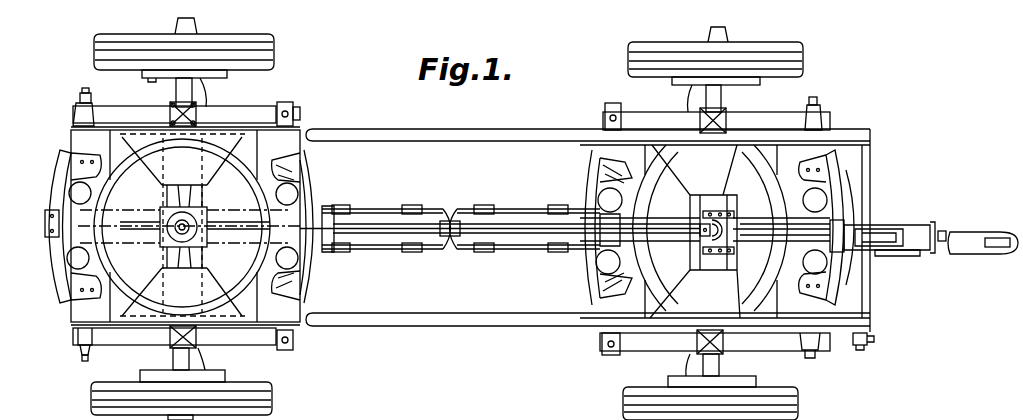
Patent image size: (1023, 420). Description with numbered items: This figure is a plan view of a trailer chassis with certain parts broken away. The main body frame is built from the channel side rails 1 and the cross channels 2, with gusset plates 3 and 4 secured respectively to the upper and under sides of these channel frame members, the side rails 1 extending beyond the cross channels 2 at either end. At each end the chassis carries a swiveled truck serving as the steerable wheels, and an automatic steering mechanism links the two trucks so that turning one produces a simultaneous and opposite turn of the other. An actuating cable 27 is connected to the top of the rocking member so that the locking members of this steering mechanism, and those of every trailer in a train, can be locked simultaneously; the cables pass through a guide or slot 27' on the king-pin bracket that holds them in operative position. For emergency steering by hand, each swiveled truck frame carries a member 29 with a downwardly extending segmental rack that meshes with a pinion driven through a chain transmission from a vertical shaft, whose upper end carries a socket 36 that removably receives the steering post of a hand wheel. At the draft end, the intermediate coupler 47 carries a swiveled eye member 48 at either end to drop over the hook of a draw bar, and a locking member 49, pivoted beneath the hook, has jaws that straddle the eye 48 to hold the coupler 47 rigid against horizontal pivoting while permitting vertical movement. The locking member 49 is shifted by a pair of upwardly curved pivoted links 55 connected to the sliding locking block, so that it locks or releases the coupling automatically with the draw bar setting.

The channel side rails 1 is at (499, 131).
The cross channels 2 is at (700, 250).
The gusset plate 3 is at (684, 170).
The gusset plate 4 is at (732, 180).
The actuating cable 27 is at (565, 219).
The guide or slot 27' is at (687, 240).
The member having a vertically disposed segmental rack 29 is at (848, 279).
The socket 36 is at (866, 345).
The intermediate coupler 47 is at (948, 228).
The eye member 48 is at (1000, 251).
The locking member 49 is at (912, 252).
The pivoted links 55 is at (890, 222).